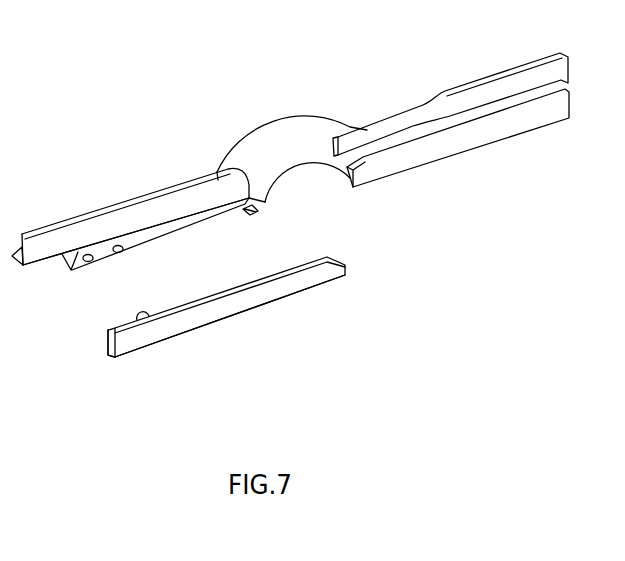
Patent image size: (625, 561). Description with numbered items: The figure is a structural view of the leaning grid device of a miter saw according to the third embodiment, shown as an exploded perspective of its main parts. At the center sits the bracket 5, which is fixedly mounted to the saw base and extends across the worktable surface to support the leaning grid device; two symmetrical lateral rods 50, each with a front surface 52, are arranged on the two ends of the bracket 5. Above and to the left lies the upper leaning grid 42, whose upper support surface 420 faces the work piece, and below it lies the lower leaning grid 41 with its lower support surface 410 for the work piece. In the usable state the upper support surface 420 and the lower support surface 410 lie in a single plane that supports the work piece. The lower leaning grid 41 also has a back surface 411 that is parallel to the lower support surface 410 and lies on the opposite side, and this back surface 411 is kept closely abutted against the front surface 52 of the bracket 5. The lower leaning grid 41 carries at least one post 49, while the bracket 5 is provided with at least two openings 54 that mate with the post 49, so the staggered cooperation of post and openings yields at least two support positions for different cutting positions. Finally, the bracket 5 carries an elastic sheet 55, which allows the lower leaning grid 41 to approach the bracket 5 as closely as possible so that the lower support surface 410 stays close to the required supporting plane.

The bracket 5 is at (290, 198).
The lower leaning grid 41 is at (113, 330).
The upper leaning grid 42 is at (110, 199).
The post 49 is at (143, 313).
The lateral rod 50 is at (67, 267).
The front surface 52 is at (187, 228).
The openings 54 is at (122, 252).
The elastic sheet 55 is at (253, 214).
The lower support surface 410 is at (170, 327).
The back surface 411 is at (108, 337).
The upper support surface 420 is at (95, 227).